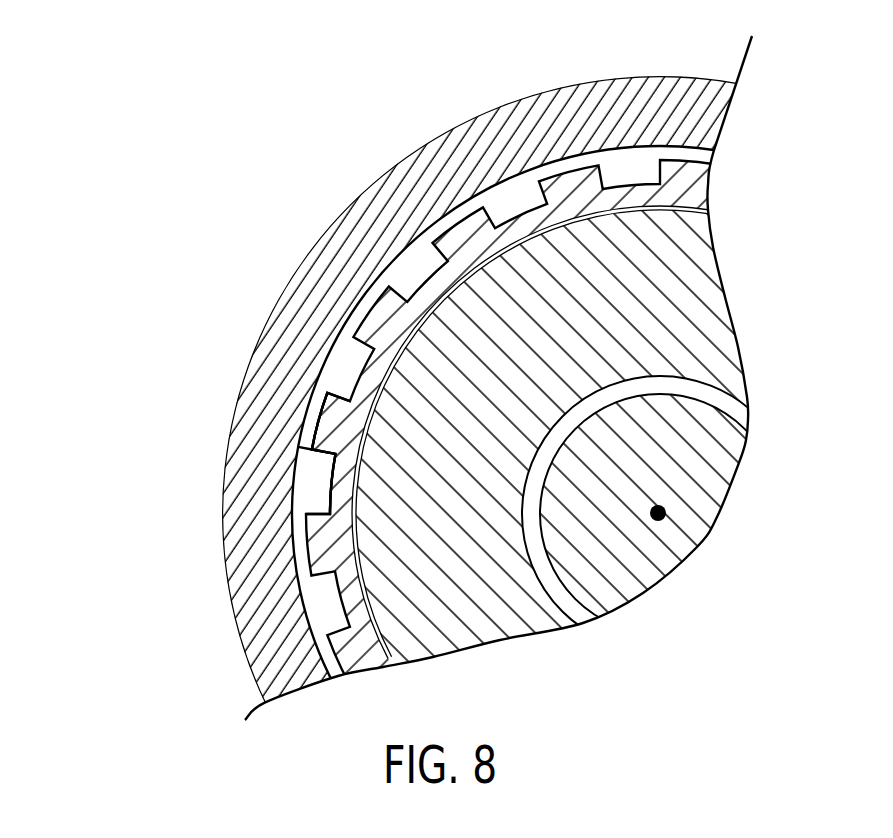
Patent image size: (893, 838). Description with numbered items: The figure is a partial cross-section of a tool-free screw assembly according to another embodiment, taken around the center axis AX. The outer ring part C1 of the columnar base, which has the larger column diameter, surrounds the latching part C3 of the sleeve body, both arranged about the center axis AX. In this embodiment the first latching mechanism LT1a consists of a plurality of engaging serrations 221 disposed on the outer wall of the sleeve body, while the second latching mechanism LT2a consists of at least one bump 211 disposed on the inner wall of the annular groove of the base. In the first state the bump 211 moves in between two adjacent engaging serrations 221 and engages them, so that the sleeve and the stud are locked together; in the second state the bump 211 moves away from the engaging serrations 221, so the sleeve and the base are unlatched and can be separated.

The center axis AX is at (658, 513).
The outer ring part C1 is at (450, 173).
The latching part C3 is at (432, 288).
The engaging serrations 221 is at (330, 430).
The bump 211 is at (307, 485).
The first latching mechanism LT1a is at (118, 396).
The second latching mechanism LT2a is at (118, 483).